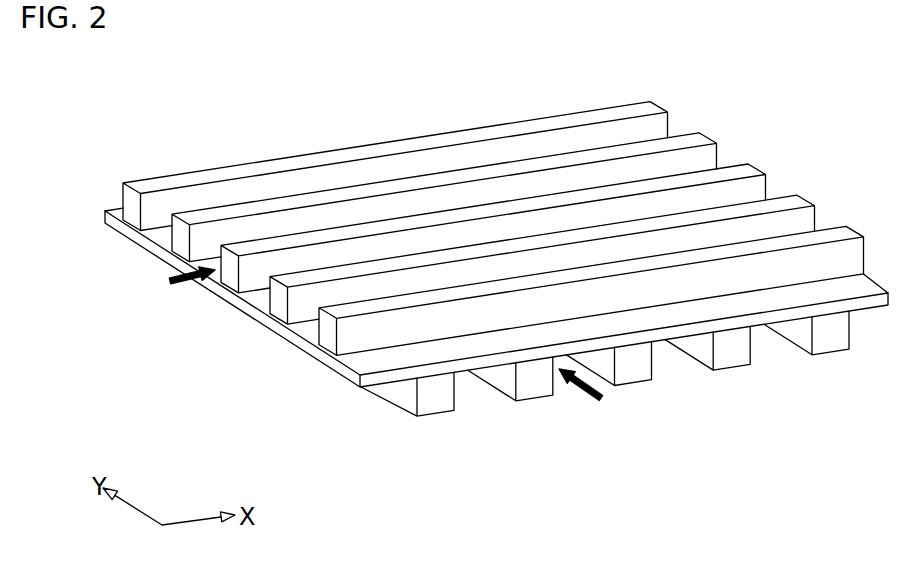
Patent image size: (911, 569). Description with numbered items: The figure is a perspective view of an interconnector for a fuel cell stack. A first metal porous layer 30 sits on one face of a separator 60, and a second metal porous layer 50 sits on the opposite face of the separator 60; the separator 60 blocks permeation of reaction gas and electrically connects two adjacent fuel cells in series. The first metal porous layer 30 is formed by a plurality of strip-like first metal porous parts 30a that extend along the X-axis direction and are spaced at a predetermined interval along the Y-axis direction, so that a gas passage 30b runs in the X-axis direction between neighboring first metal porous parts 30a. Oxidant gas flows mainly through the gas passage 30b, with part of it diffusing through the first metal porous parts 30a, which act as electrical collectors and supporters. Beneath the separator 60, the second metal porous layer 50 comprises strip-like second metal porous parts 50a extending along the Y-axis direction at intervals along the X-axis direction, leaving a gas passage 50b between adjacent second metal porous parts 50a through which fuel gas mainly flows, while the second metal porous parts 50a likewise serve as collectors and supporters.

The first metal porous layer 30 is at (127, 112).
The first metal porous part 30a is at (160, 176).
The gas passage 30b is at (140, 235).
The second metal porous layer 50 is at (493, 502).
The second metal porous part 50a is at (402, 392).
The gas passage 50b is at (478, 392).
The separator 60 is at (282, 338).